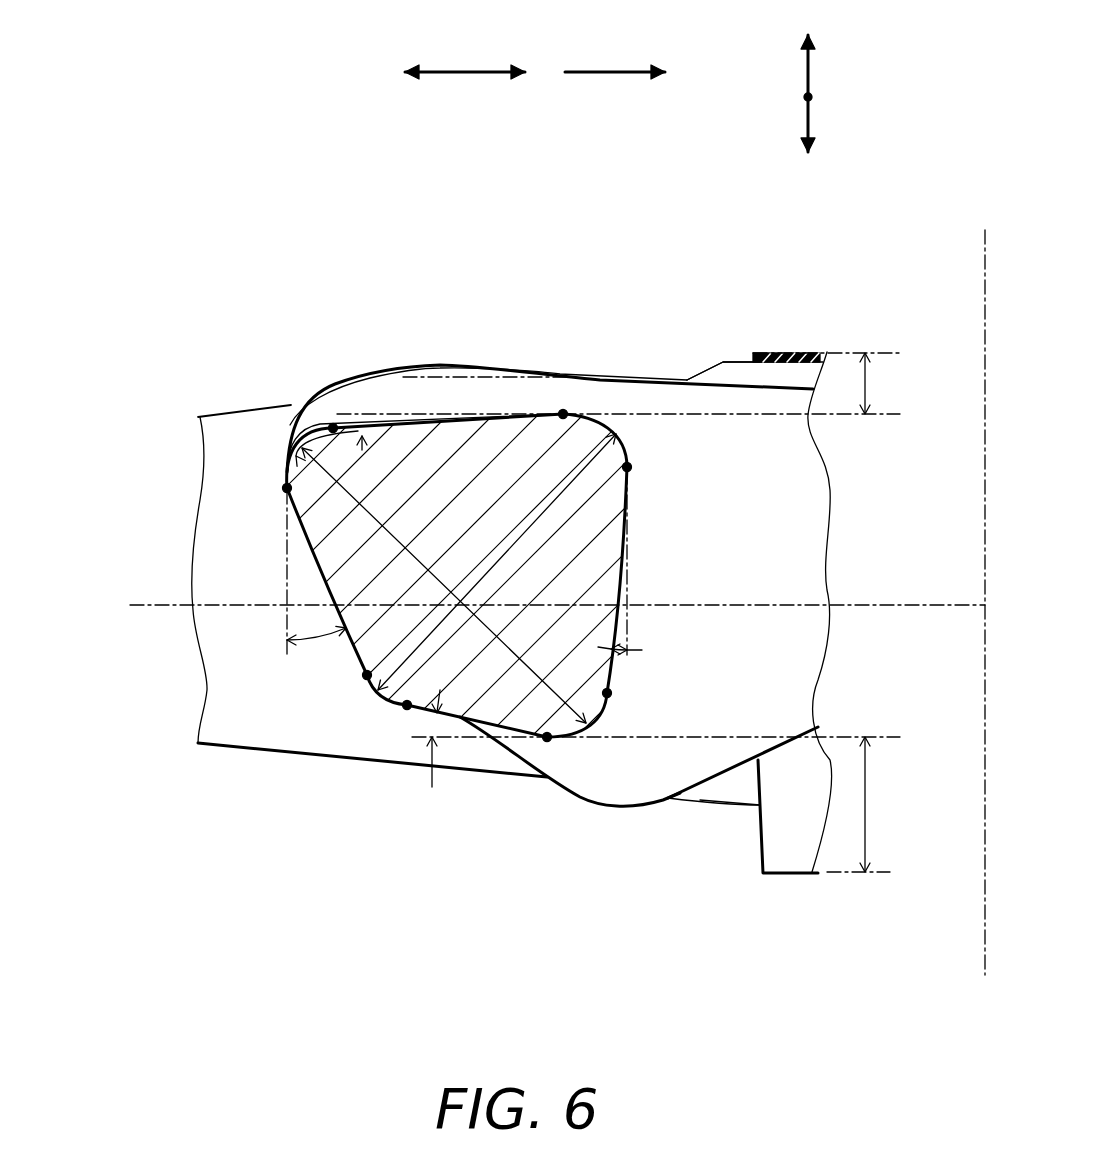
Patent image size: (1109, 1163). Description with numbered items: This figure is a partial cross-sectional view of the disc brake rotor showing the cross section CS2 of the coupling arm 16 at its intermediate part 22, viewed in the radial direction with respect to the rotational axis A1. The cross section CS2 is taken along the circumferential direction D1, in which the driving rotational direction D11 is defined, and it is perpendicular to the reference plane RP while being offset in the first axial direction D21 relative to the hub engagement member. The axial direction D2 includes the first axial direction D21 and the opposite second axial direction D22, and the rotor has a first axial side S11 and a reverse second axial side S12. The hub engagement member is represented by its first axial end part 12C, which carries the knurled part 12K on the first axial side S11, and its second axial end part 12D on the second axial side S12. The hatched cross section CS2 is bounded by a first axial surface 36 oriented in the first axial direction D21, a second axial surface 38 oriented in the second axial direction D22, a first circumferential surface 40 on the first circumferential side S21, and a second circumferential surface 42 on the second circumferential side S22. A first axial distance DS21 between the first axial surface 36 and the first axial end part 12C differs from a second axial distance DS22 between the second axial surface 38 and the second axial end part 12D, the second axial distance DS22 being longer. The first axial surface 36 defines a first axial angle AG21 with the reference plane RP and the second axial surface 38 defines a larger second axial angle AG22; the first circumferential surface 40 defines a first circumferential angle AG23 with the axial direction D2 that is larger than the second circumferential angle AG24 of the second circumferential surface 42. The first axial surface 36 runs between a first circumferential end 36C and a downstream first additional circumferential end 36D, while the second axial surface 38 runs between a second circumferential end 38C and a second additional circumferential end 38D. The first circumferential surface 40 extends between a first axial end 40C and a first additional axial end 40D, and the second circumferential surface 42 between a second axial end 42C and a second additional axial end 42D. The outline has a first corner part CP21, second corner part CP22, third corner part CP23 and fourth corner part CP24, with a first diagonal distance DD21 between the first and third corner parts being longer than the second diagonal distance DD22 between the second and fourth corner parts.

The circumferential direction D1 is at (478, 70).
The driving rotational direction D11 is at (618, 70).
The axial direction D2 is at (898, 68).
The first axial direction D21 is at (812, 72).
The second axial direction D22 is at (812, 122).
The reference plane RP is at (150, 606).
The rotational axis A1 is at (983, 913).
The coupling arm 16 is at (449, 499).
The intermediate part 22 is at (610, 795).
The first axial end part 12C is at (745, 515).
The knurled part 12K is at (797, 296).
The second axial end part 12D is at (793, 875).
The first axial side S11 is at (710, 323).
The second axial side S12 is at (723, 890).
The first axial distance DS21 is at (866, 392).
The second axial distance DS22 is at (868, 815).
The first axial surface 36 is at (460, 418).
The first circumferential end 36C is at (332, 424).
The first additional circumferential end 36D is at (563, 410).
The second axial surface 38 is at (490, 722).
The second circumferential end 38C is at (407, 708).
The second additional circumferential end 38D is at (547, 742).
The first circumferential surface 40 is at (325, 577).
The first axial end 40C is at (287, 488).
The first additional axial end 40D is at (367, 678).
The second circumferential surface 42 is at (618, 572).
The second axial end 42C is at (627, 467).
The second additional axial end 42D is at (607, 693).
The first corner part CP21 is at (277, 407).
The second corner part CP22 is at (615, 396).
The third corner part CP23 is at (622, 798).
The fourth corner part CP24 is at (263, 729).
The first diagonal distance DD21 is at (376, 518).
The second diagonal distance DD22 is at (558, 492).
The cross section CS2 is at (432, 364).
The first circumferential side S21 is at (206, 572).
The second circumferential side S22 is at (759, 562).
The first axial angle AG21 is at (346, 366).
The second axial angle AG22 is at (432, 787).
The first circumferential angle AG23 is at (316, 640).
The second circumferential angle AG24 is at (648, 650).